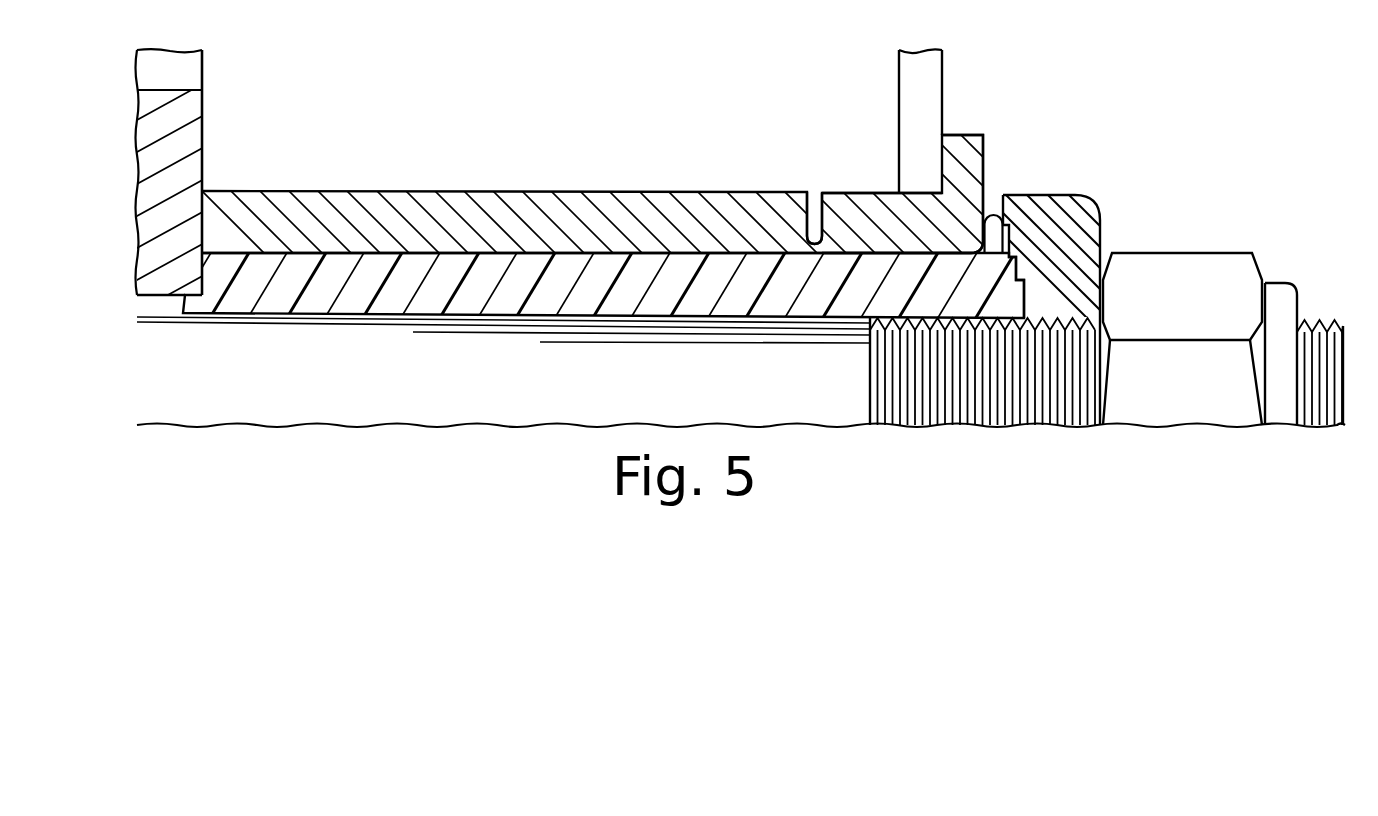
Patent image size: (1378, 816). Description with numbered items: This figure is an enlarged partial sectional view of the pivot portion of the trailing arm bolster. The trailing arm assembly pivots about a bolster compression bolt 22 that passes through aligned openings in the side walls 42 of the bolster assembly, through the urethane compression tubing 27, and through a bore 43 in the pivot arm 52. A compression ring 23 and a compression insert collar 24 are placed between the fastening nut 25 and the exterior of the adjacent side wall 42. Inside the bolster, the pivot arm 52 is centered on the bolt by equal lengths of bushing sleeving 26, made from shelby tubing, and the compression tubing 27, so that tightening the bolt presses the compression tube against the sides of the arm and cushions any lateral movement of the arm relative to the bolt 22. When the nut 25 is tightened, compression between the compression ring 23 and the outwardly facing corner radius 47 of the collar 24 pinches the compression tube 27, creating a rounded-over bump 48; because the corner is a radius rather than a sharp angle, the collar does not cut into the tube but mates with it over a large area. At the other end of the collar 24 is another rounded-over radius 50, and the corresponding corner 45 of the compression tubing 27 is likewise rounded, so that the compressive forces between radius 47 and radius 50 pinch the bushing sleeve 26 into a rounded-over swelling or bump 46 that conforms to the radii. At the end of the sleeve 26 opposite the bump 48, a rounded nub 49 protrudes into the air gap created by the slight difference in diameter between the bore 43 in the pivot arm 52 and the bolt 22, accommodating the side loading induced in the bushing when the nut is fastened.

The bolster compression bolt 22 is at (1335, 323).
The compression ring 23 is at (1087, 195).
The compression insert collar 24 is at (983, 137).
The fastening nut 25 is at (1170, 253).
The bushing sleeving 26 is at (362, 191).
The urethane compression tubing 27 is at (398, 313).
The side wall 42 is at (946, 93).
The bore 43 is at (155, 302).
The corner of compression tubing 45 is at (805, 242).
The rounded-over swelling or bump 46 is at (815, 242).
The outwardly facing corner radius 47 is at (983, 262).
The rounded-over bump 48 is at (993, 214).
The rounded nub 49 is at (182, 298).
The rounded-over radius 50 is at (835, 242).
The pivot arm 52 is at (202, 112).